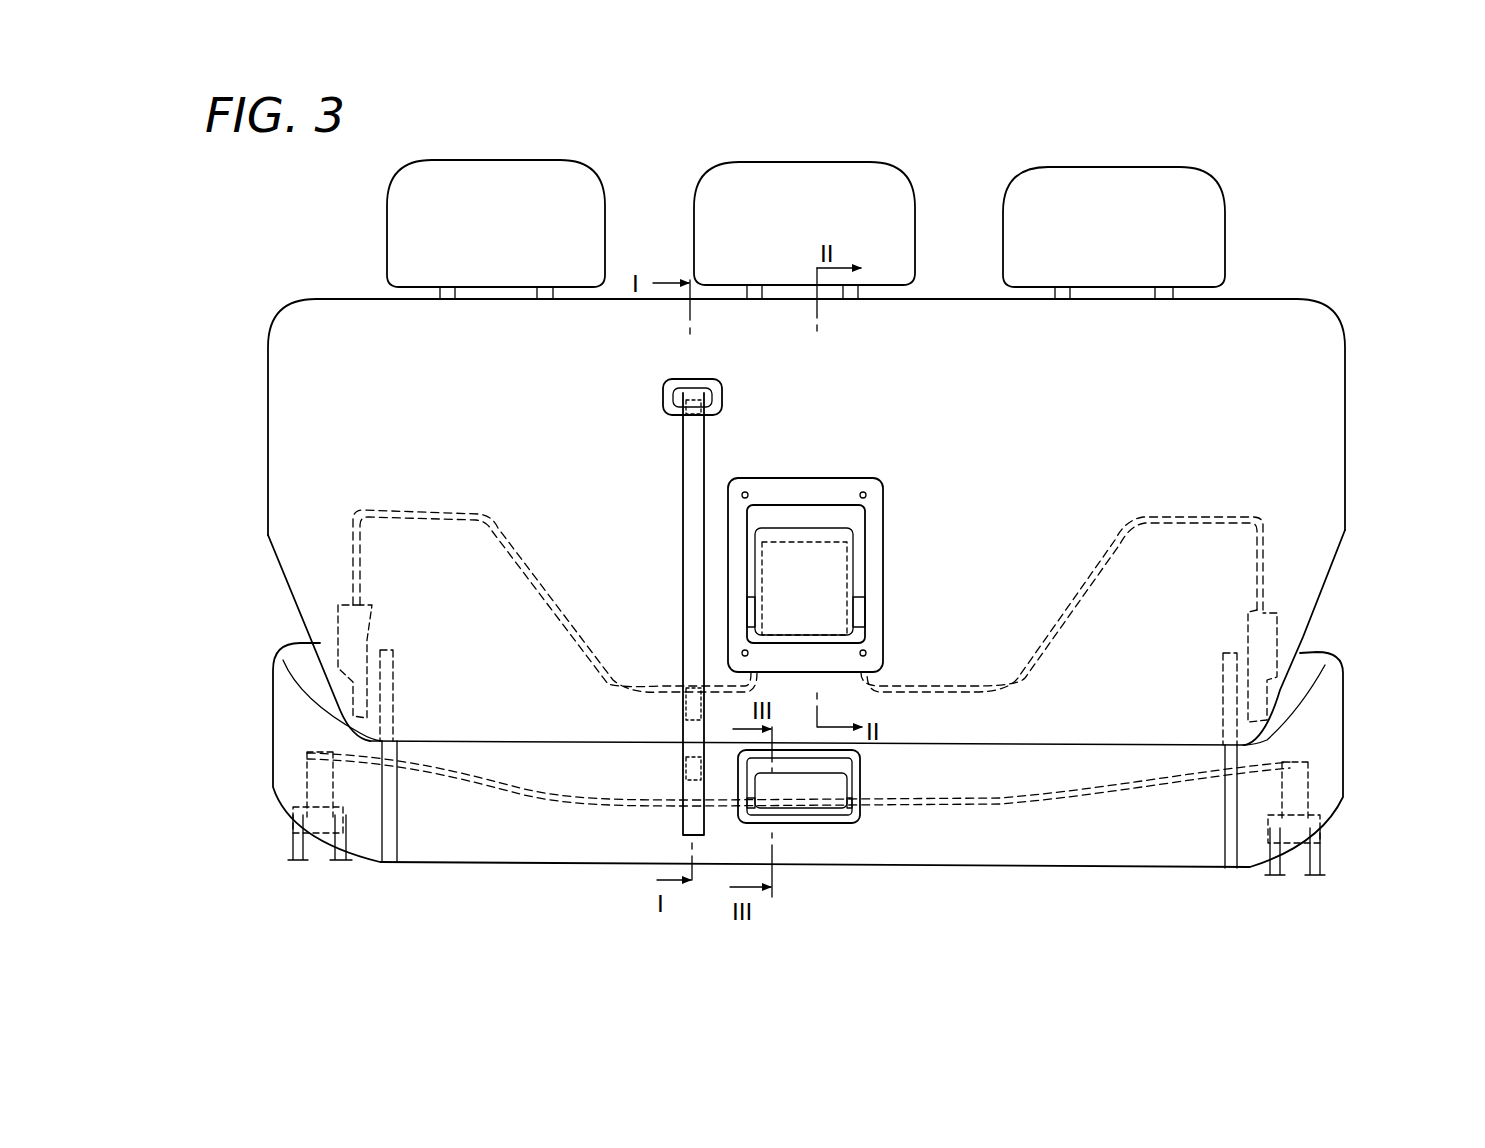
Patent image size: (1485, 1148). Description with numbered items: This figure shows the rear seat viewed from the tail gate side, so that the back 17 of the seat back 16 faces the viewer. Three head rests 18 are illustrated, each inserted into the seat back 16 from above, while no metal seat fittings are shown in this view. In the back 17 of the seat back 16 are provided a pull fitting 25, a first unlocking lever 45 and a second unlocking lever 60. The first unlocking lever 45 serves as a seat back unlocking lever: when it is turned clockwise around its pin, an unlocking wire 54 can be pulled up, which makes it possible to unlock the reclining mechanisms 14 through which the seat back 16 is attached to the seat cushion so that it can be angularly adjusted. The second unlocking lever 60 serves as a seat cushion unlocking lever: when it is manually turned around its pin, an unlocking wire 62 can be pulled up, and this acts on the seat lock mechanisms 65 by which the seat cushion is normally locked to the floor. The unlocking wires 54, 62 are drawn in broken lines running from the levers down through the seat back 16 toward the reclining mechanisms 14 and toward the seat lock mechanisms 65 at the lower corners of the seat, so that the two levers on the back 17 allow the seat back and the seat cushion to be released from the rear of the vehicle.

The reclining mechanisms 14 is at (340, 630).
The seat back 16 is at (1347, 413).
The back 17 is at (1156, 384).
The head rest 18 is at (390, 198).
The pull fitting 25 is at (683, 630).
The first unlocking lever 45 is at (818, 578).
The unlocking wire 54 is at (415, 510).
The second unlocking lever 60 is at (813, 792).
The unlocking wire 62 is at (510, 787).
The seat lock mechanisms 65 is at (307, 783).